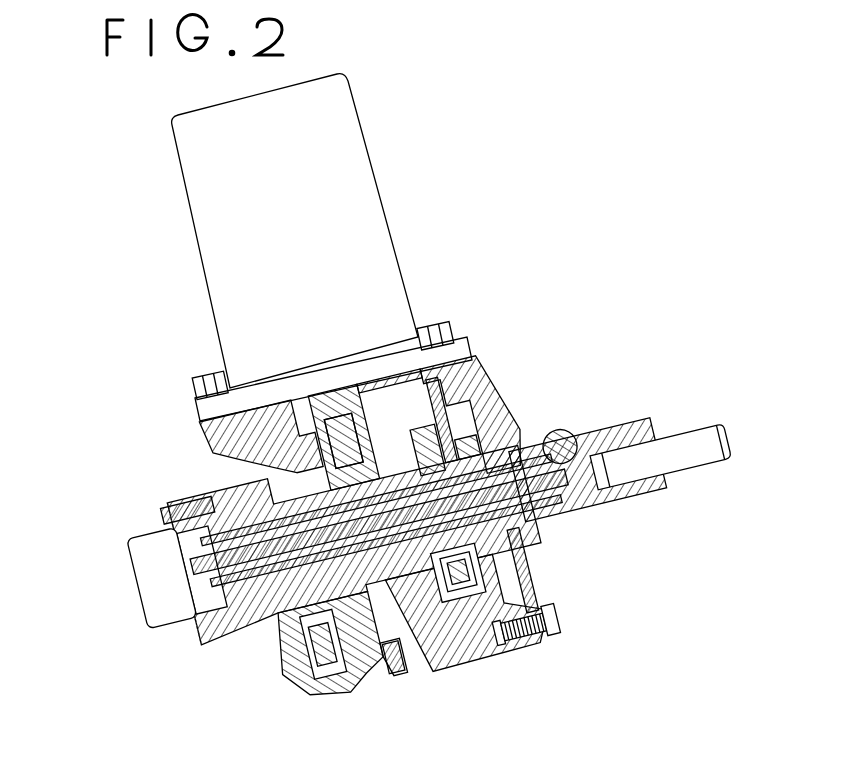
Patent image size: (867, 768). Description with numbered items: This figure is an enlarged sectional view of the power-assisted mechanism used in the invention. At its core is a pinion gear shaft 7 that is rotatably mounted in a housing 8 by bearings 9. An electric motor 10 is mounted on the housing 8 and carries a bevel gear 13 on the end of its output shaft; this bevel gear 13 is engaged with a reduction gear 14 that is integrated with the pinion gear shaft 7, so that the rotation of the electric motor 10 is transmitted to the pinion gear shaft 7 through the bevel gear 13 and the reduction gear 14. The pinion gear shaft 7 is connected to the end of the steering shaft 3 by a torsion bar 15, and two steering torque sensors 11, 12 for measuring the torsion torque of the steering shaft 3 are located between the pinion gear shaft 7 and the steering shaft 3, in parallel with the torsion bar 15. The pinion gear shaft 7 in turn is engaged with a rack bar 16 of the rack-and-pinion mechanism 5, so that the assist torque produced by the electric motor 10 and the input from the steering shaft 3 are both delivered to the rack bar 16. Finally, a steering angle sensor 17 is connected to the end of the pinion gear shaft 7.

The steering shaft 3 is at (669, 457).
The rack-and-pinion mechanism 5 is at (387, 647).
The pinion gear shaft 7 is at (290, 510).
The housing 8 is at (443, 657).
The bearings 9 is at (197, 498).
The electric motor 10 is at (345, 158).
The steering torque sensor 11 is at (487, 402).
The steering torque sensor 12 is at (528, 576).
The bevel gear 13 is at (350, 420).
The reduction gear 14 is at (500, 650).
The torsion bar 15 is at (587, 513).
The rack bar 16 is at (268, 632).
The steering angle sensor 17 is at (157, 597).